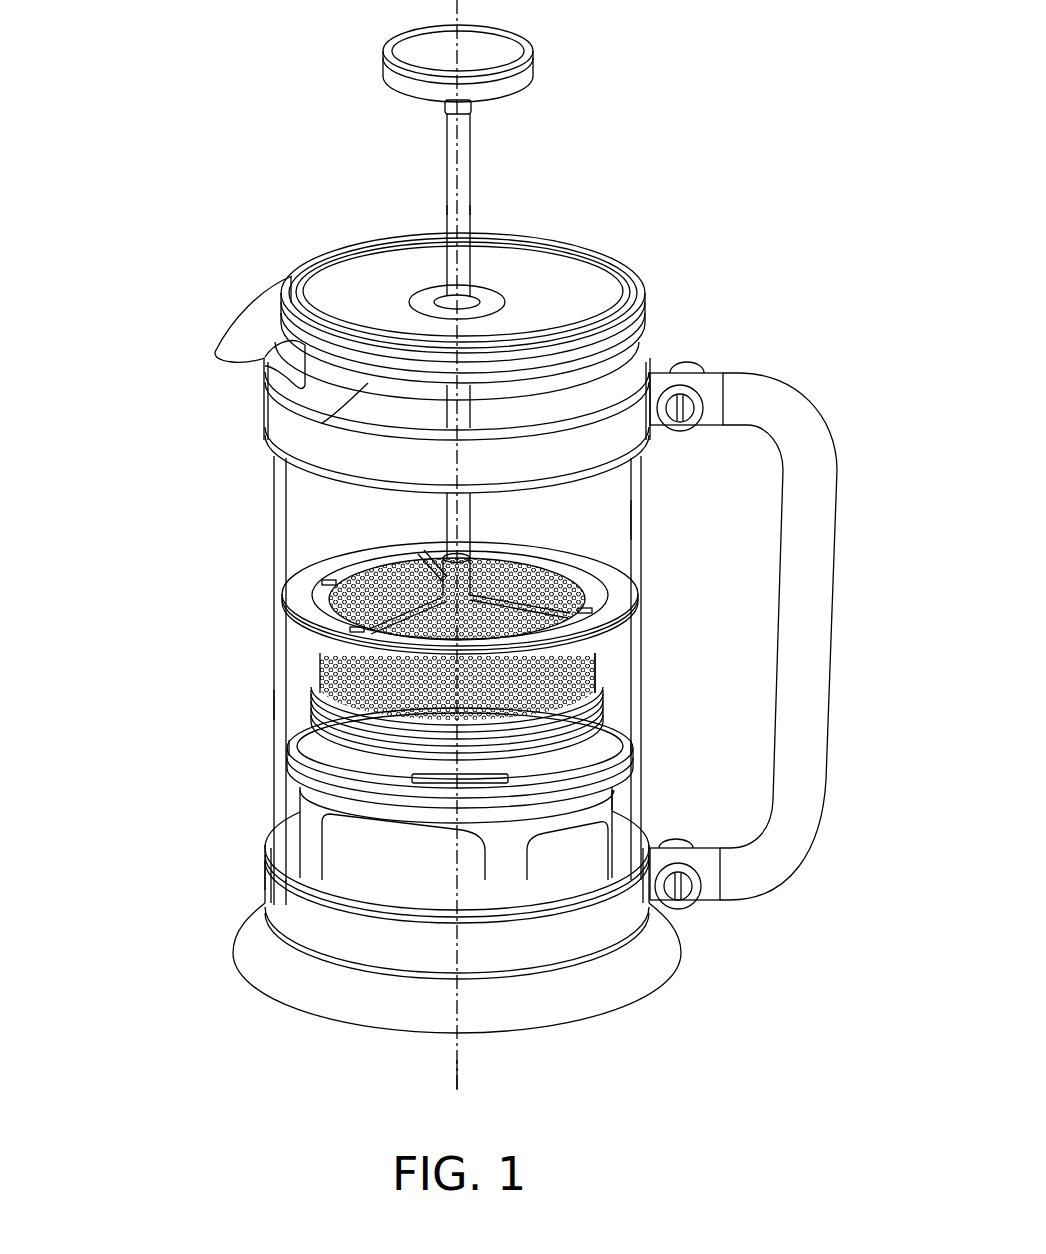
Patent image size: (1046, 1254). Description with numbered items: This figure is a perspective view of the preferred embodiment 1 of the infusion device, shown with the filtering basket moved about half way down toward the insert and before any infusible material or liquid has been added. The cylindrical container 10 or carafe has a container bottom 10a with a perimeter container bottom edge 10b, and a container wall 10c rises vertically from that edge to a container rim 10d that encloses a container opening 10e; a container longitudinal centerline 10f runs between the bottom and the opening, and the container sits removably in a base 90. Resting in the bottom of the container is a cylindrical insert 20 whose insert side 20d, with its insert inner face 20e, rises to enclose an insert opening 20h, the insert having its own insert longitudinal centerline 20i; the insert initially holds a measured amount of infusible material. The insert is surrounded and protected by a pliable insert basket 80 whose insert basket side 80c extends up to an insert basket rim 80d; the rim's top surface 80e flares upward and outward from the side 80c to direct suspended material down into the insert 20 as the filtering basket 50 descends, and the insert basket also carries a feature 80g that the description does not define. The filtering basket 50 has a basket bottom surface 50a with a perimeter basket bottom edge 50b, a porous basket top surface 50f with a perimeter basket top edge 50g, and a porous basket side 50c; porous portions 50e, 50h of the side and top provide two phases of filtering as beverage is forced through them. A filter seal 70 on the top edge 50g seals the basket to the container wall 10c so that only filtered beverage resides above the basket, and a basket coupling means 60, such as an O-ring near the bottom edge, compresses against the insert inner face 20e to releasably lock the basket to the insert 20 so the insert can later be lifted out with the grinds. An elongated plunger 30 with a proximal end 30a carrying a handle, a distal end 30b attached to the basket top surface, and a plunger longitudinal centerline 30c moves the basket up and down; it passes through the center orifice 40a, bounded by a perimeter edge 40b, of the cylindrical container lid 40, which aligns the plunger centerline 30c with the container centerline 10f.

The coffee press assembly 1 is at (130, 202).
The cylindrical container 10 is at (305, 527).
The container bottom 10a is at (295, 920).
The perimeter container bottom edge 10b is at (268, 905).
The container wall 10c is at (285, 706).
The container rim 10d is at (598, 246).
The container opening 10e is at (266, 400).
The container longitudinal centerline 10f is at (480, 545).
The cylindrical insert 20 is at (625, 845).
The insert side 20d is at (615, 800).
The insert inner face 20e is at (598, 722).
The insert opening 20h is at (330, 776).
The insert longitudinal centerline 20i is at (453, 878).
The elongated plunger 30 is at (470, 180).
The proximal end 30a is at (472, 108).
The distal end 30b is at (472, 562).
The plunger longitudinal centerline 30c is at (447, 212).
The cylindrical container lid 40 is at (355, 268).
The center orifice 40a is at (330, 284).
The perimeter edge 40b is at (510, 300).
The filtering basket 50 is at (330, 614).
The basket bottom surface 50a is at (592, 668).
The perimeter basket bottom edge 50b is at (598, 690).
The porous basket side 50c is at (330, 672).
The porous portion 50e is at (330, 736).
The porous basket top surface 50f is at (560, 582).
The perimeter basket top edge 50g is at (325, 585).
The porous portion 50h is at (590, 602).
The basket coupling means 60 is at (630, 705).
The filter seal 70 is at (330, 638).
The pliable insert basket 80 is at (507, 897).
The insert basket side 80c is at (300, 840).
The insert basket rim 80d is at (620, 772).
The top surface 80e is at (610, 748).
The central axis 80g is at (462, 1082).
The base 90 is at (660, 950).